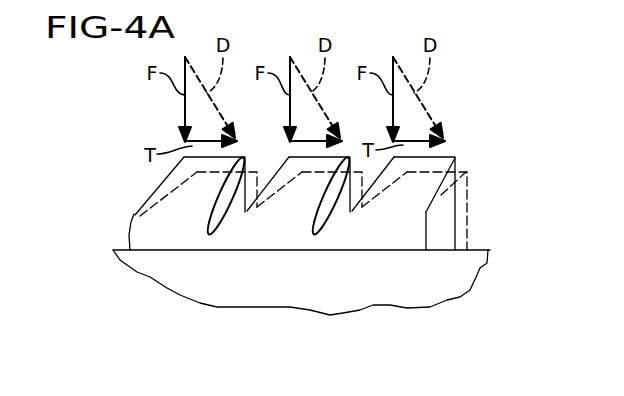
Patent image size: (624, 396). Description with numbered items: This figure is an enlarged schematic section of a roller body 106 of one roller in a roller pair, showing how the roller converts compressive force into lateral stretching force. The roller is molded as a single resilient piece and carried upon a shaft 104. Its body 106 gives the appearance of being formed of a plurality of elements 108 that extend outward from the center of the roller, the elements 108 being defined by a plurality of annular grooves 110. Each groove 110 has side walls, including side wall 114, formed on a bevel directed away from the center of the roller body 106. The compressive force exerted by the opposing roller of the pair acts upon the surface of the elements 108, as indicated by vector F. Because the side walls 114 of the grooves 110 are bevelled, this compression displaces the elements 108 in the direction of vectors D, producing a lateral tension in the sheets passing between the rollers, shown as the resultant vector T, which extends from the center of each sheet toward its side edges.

The shaft 104 is at (345, 300).
The roller body 106 is at (462, 151).
The elements 108 is at (165, 190).
The annular grooves 110 is at (224, 196).
The side wall 114 is at (130, 212).